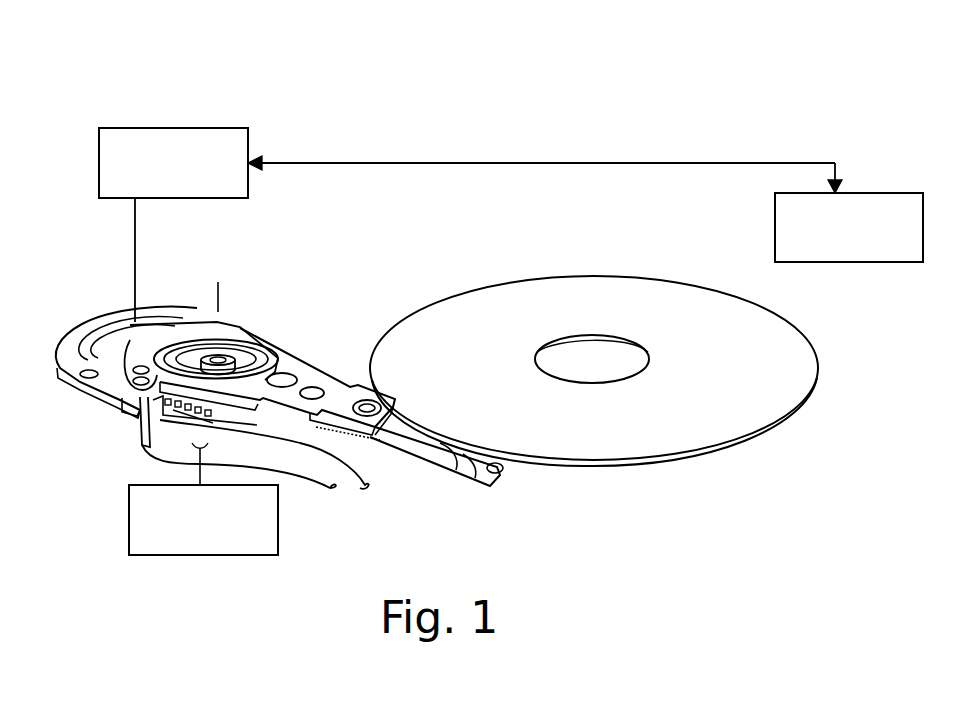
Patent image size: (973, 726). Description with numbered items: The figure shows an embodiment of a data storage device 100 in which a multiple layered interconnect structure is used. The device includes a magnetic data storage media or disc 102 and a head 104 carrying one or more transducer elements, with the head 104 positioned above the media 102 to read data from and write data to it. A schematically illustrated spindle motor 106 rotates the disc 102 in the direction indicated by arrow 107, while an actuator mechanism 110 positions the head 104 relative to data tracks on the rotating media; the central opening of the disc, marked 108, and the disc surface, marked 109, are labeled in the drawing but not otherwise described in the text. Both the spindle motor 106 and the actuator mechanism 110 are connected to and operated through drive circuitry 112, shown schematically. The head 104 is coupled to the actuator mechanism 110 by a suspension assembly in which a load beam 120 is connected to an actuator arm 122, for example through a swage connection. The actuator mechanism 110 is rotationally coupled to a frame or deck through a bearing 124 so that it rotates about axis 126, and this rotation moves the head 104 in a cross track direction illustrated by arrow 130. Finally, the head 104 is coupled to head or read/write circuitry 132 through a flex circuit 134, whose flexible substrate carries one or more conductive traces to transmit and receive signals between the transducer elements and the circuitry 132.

The data storage device 100 is at (727, 127).
The disc 102 is at (690, 317).
The head 104 is at (500, 470).
The spindle motor 106 is at (890, 193).
The arrow 107 is at (456, 330).
The disk central hole / spindle 108 is at (617, 337).
The disk surface 109 is at (557, 277).
The actuator mechanism 110 is at (315, 375).
The drive circuitry 112 is at (218, 128).
The load beam 120 is at (395, 425).
The actuator arm 122 is at (313, 362).
The bearing 124 is at (213, 352).
The axis 126 is at (210, 300).
The arrow 130 is at (453, 493).
The read/write circuitry 132 is at (129, 516).
The flex circuit 134 is at (262, 455).